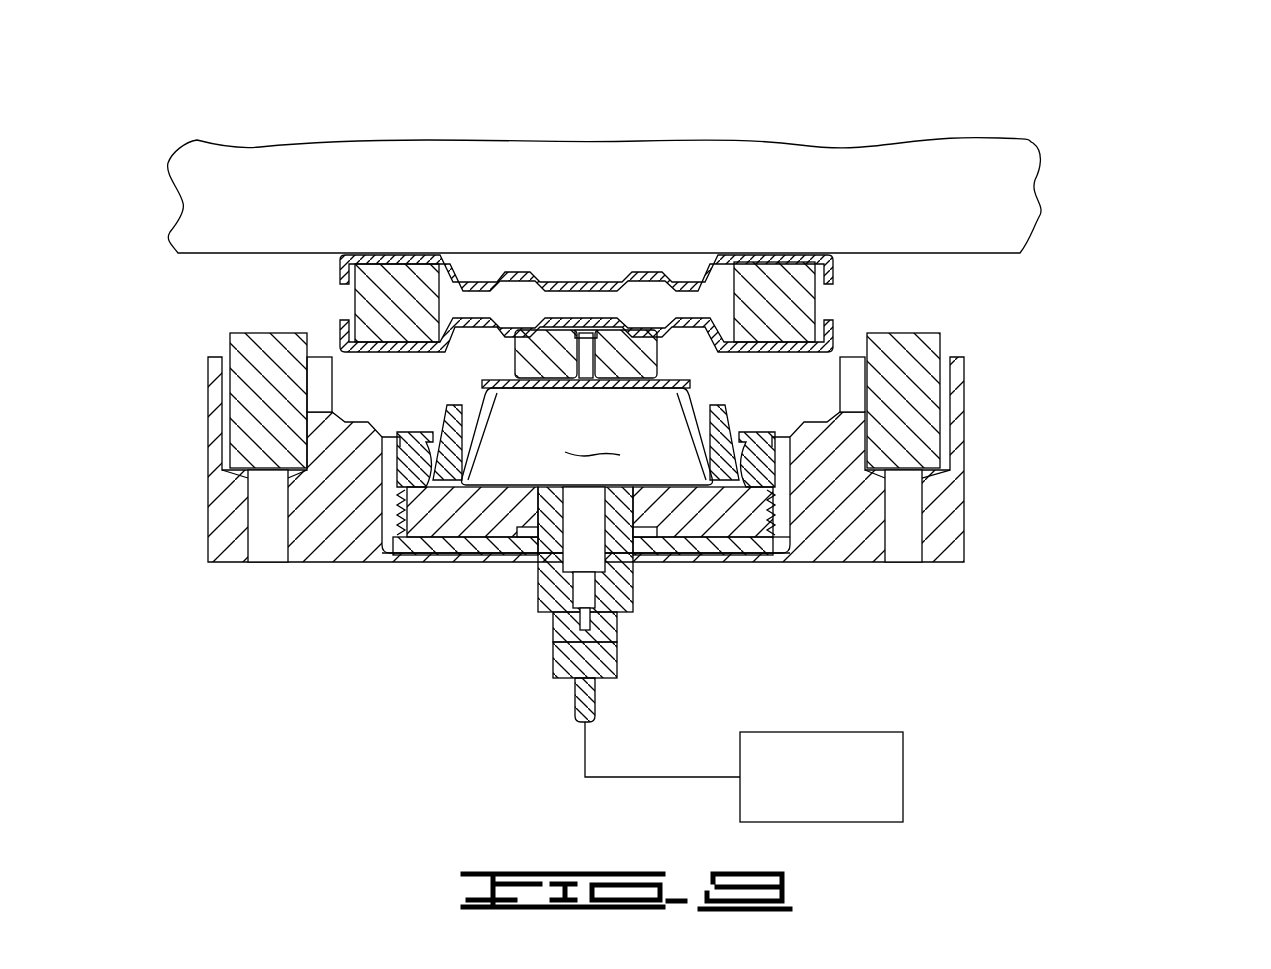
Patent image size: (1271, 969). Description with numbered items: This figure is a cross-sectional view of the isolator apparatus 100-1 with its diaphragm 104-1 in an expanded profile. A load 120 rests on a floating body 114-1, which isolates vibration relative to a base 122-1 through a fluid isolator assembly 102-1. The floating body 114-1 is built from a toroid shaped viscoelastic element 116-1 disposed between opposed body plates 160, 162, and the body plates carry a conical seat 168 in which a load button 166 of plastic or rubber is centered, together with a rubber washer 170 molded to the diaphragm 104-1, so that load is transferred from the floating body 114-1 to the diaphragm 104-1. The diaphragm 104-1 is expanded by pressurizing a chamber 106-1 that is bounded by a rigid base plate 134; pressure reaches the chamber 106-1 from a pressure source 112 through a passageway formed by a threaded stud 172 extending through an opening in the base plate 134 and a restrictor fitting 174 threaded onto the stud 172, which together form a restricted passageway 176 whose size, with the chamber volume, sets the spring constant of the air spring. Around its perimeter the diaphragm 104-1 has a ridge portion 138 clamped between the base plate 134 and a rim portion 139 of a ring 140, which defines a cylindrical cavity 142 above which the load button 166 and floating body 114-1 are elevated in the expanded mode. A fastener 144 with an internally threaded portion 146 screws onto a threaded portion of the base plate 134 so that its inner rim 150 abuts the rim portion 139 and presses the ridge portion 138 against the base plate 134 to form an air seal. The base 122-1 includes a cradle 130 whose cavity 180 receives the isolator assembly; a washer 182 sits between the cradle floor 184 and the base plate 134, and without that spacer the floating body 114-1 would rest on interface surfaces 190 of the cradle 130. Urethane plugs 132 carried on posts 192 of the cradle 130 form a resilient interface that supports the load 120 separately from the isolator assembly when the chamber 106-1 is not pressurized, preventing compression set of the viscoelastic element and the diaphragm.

The isolator apparatus 100-1 is at (1110, 135).
The fluid isolator assembly 102-1 is at (690, 365).
The diaphragm 104-1 is at (690, 393).
The chamber 106-1 is at (591, 440).
The pressure source 112 is at (905, 758).
The floating body 114-1 is at (805, 302).
The toroid shaped viscoelastic element 116-1 is at (400, 273).
The load 120 is at (190, 130).
The base 122-1 is at (988, 352).
The cradle 130 is at (964, 490).
The plugs 132 is at (228, 350).
The rigid base plate 134 is at (700, 527).
The ridge portion 138 is at (423, 483).
The rim portion 139 is at (385, 478).
The ring 140 is at (457, 415).
The cylindrical cavity 142 is at (715, 400).
The fastener 144 is at (378, 455).
The internally threaded portion 146 is at (385, 548).
The inner rim 150 is at (428, 432).
The body plate 160 is at (342, 277).
The body plate 162 is at (342, 325).
The load button 166 is at (617, 337).
The conical seat 168 is at (541, 330).
The rubber washer 170 is at (555, 400).
The threaded stud 172 is at (542, 597).
The restrictor fitting 174 is at (560, 665).
The restricted passageway 176 is at (617, 657).
The cavity 180 is at (800, 538).
The washer 182 is at (767, 547).
The cradle floor 184 is at (675, 540).
The interface surfaces 190 is at (375, 432).
The posts 192 is at (208, 374).